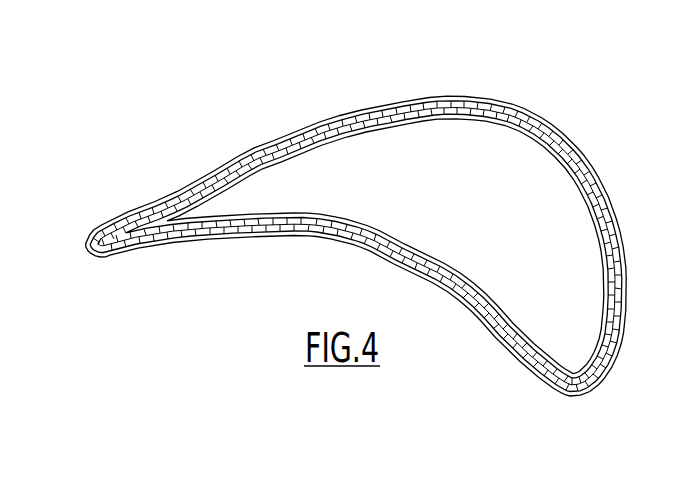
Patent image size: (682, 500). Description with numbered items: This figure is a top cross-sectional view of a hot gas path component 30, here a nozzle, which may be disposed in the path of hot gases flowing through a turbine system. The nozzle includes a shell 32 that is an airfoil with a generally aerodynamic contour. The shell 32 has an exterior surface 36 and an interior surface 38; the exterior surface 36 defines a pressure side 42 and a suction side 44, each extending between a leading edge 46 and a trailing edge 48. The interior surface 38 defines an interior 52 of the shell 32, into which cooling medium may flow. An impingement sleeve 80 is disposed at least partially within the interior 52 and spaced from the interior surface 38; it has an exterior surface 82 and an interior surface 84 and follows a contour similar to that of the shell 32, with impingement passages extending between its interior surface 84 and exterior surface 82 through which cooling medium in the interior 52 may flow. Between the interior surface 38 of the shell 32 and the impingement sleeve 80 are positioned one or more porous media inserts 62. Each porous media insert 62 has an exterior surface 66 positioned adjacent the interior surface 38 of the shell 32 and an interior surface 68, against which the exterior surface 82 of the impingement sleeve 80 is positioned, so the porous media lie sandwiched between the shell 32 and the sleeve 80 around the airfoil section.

The hot gas path component 30 is at (178, 123).
The shell 32 is at (317, 123).
The exterior surface 36 is at (468, 103).
The interior surface 38 is at (542, 137).
The pressure side 42 is at (367, 250).
The suction side 44 is at (435, 95).
The leading edge 46 is at (580, 403).
The trailing edge 48 is at (87, 265).
The interior 52 is at (465, 200).
The porous media insert 62 is at (383, 108).
The exterior surface 66 is at (585, 166).
The interior surface 68 is at (558, 167).
The impingement sleeve 80 is at (357, 137).
The exterior surface 82 is at (613, 283).
The interior surface 84 is at (588, 212).